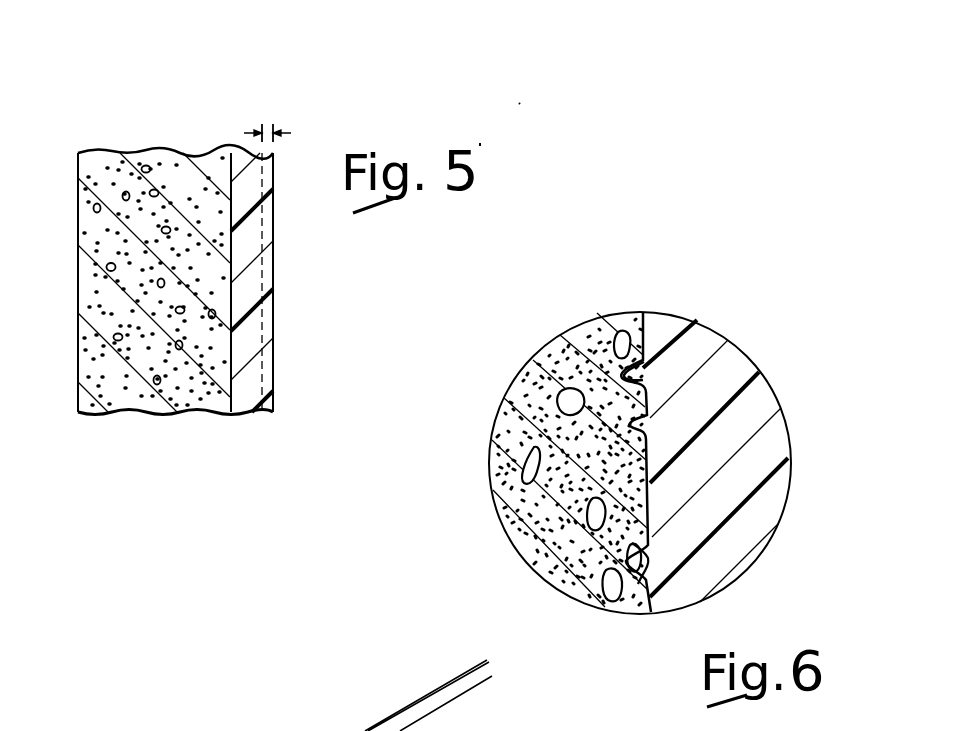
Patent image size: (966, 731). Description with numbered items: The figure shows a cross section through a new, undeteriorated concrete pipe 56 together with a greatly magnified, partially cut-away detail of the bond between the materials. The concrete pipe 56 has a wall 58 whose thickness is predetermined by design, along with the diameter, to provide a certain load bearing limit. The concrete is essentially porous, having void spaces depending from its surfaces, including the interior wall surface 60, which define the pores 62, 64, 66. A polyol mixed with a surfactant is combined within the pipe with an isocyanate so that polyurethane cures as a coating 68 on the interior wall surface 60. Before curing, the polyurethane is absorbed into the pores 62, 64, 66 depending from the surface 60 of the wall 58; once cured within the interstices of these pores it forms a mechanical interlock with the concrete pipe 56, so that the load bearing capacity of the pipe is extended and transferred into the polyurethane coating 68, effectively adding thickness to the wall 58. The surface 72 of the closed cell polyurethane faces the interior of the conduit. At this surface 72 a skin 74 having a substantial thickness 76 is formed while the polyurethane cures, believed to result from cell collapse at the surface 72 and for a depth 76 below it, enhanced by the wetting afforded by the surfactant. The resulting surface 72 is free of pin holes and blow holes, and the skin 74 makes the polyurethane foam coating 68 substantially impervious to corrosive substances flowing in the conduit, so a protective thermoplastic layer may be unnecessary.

In FIG. 5, the concrete pipe 56 is at (138, 405).
In FIG. 6, the concrete pipe 56 is at (553, 353).
In FIG. 5, the wall 58 is at (218, 114).
In FIG. 5, the interior wall surface 60 is at (233, 347).
In FIG. 6, the pore 62 is at (640, 372).
In FIG. 6, the pore 64 is at (645, 446).
In FIG. 6, the pore 66 is at (648, 560).
In FIG. 5, the polyurethane coating 68 is at (243, 400).
In FIG. 6, the polyurethane coating 68 is at (730, 365).
In FIG. 5, the surface 72 is at (277, 307).
In FIG. 5, the skin 74 is at (270, 418).
In FIG. 5, the thickness 76 is at (282, 126).